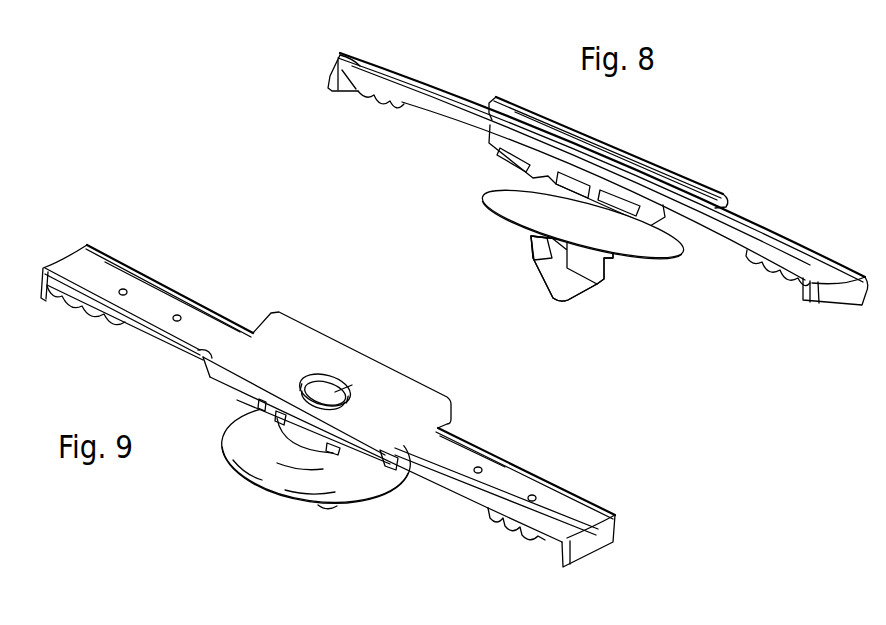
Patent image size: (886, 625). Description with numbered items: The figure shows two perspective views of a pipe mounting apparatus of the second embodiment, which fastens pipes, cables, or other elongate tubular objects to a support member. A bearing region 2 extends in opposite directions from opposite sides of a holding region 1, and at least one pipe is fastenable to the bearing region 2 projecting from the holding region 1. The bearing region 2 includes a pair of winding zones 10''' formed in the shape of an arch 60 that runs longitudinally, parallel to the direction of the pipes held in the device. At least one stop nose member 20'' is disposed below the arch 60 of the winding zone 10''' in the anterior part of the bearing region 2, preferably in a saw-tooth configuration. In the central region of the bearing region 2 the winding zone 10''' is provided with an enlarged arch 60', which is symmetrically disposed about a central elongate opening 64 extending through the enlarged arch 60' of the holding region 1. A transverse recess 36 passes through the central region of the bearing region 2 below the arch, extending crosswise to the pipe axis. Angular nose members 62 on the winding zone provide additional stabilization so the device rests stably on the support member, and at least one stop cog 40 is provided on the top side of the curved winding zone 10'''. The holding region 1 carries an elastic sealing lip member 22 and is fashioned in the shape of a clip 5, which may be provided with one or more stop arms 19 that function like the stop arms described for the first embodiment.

In FIG. 8, the holding region 1 is at (460, 229).
In FIG. 8, the bearing region 2 is at (683, 160).
In FIG. 8, the clip 5 is at (578, 300).
In FIG. 8, the winding zone 10''' is at (602, 145).
In FIG. 9, the winding zone 10''' is at (351, 357).
In FIG. 8, the stop arm 19 is at (532, 246).
In FIG. 8, the stop nose member 20'' is at (582, 211).
In FIG. 9, the stop nose member 20'' is at (296, 413).
In FIG. 8, the elastic sealing lip member 22 is at (483, 201).
In FIG. 9, the elastic sealing lip member 22 is at (273, 488).
In FIG. 8, the transverse recess 36 is at (566, 180).
In FIG. 9, the stop cog 40 is at (123, 296).
In FIG. 8, the arch 60 is at (600, 157).
In FIG. 9, the arch 60 is at (329, 372).
In FIG. 8, the enlarged arch 60' is at (616, 156).
In FIG. 9, the enlarged arch 60' is at (345, 410).
In FIG. 8, the angular nose member 62 is at (333, 88).
In FIG. 9, the angular nose member 62 is at (41, 300).
In FIG. 9, the elongate opening 64 is at (350, 396).